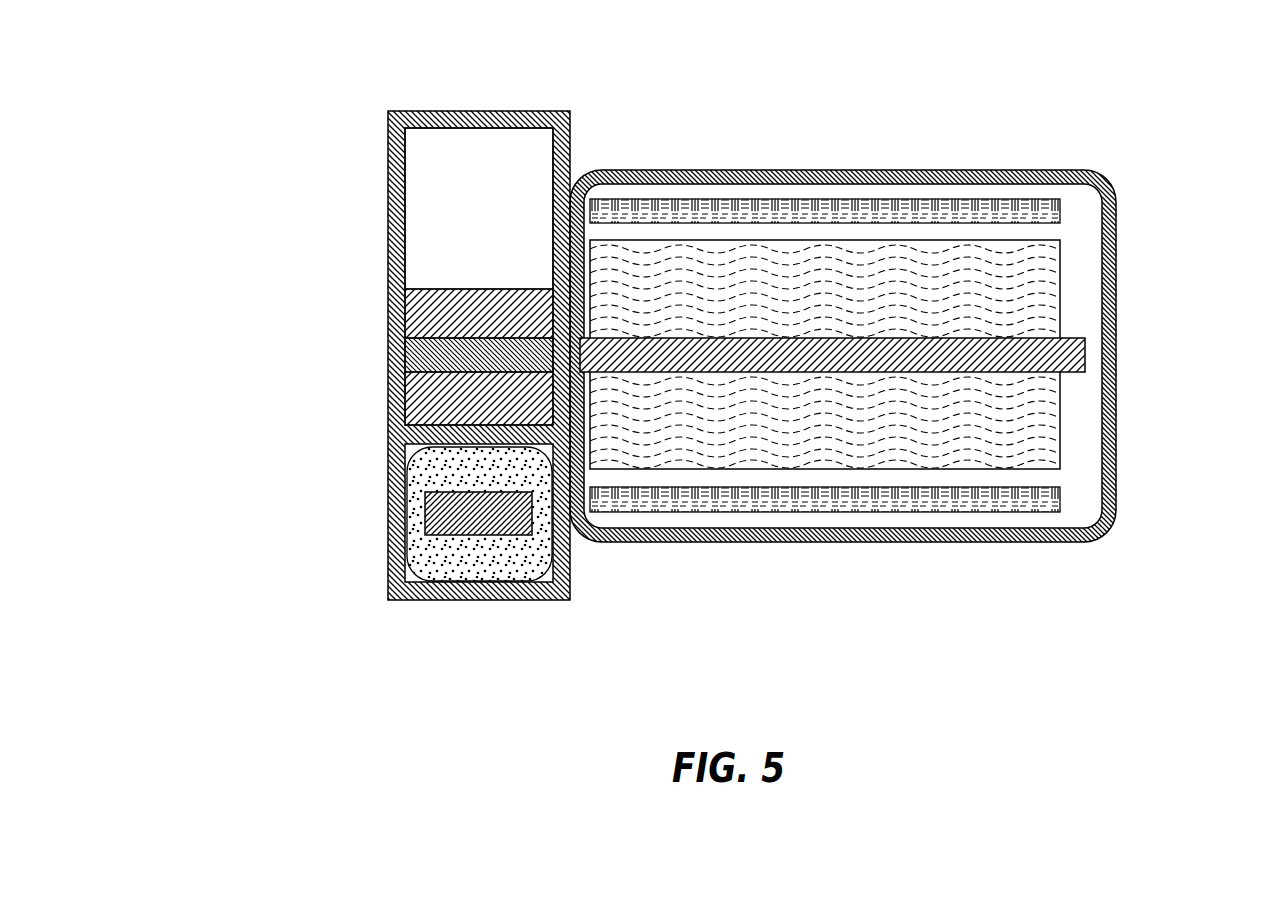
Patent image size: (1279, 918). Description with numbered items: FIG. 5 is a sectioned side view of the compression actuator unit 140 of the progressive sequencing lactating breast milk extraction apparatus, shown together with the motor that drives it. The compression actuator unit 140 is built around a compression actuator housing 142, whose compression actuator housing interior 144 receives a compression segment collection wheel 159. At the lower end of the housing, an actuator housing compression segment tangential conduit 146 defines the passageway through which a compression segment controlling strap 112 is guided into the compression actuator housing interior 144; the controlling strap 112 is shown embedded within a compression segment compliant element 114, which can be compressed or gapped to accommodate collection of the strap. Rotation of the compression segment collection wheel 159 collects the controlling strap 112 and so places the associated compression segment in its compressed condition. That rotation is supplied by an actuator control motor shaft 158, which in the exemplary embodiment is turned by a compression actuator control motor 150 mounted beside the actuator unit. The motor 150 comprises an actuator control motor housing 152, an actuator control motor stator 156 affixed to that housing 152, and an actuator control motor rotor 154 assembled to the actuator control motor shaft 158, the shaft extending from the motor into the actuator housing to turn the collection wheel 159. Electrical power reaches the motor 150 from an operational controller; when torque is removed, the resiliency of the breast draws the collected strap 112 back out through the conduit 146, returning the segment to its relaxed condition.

The compression actuator unit 140 is at (588, 96).
The compression actuator housing 142 is at (372, 111).
The compression actuator housing interior 144 is at (467, 128).
The actuator housing compression segment tangential conduit 146 is at (372, 432).
The compression segment controlling strap 112 is at (457, 517).
The compression segment compliant element 114 is at (457, 468).
The compression segment collection wheel 159 is at (428, 320).
The compression actuator control motor 150 is at (1167, 142).
The actuator control motor housing 152 is at (847, 177).
The actuator control motor rotor 154 is at (1033, 291).
The actuator control motor stator 156 is at (958, 211).
The actuator control motor shaft 158 is at (1068, 353).